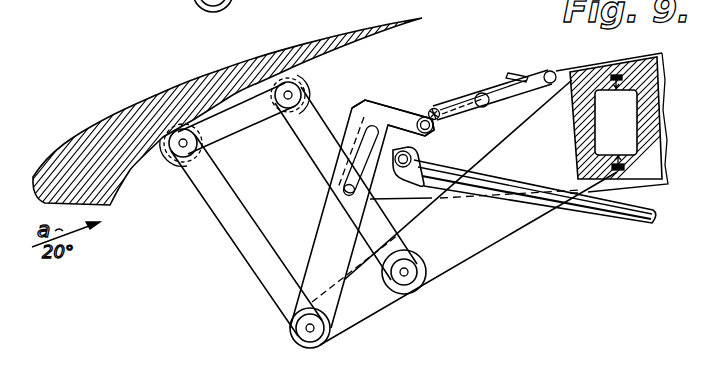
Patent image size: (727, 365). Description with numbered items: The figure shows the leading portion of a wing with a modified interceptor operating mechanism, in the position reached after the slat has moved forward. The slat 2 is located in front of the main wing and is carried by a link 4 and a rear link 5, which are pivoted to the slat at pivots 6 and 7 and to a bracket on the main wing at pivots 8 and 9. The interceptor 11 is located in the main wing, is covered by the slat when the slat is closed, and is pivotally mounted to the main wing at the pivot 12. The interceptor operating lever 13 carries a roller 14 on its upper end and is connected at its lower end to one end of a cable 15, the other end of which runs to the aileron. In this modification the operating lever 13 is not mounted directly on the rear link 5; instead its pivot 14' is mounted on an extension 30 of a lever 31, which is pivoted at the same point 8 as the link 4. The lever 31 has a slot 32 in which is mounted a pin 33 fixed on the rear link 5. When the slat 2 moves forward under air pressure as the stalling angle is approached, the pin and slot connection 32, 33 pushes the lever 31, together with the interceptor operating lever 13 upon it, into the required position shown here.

The slat 2 is at (168, 93).
The link 4 is at (222, 206).
The link 5 is at (309, 139).
The pivot 6 is at (176, 155).
The pivot 7 is at (291, 94).
The pivot 8 is at (312, 330).
The pivot 9 is at (406, 274).
The interceptor 11 is at (528, 72).
The pivot 12 is at (436, 109).
The interceptor operating lever 13 is at (462, 121).
The roller 14 is at (502, 106).
The pivot 14' is at (452, 140).
The cable 15 is at (616, 215).
The extension 30 is at (382, 110).
The lever 31 is at (323, 236).
The slot 32 is at (367, 129).
The pin 33 is at (343, 189).